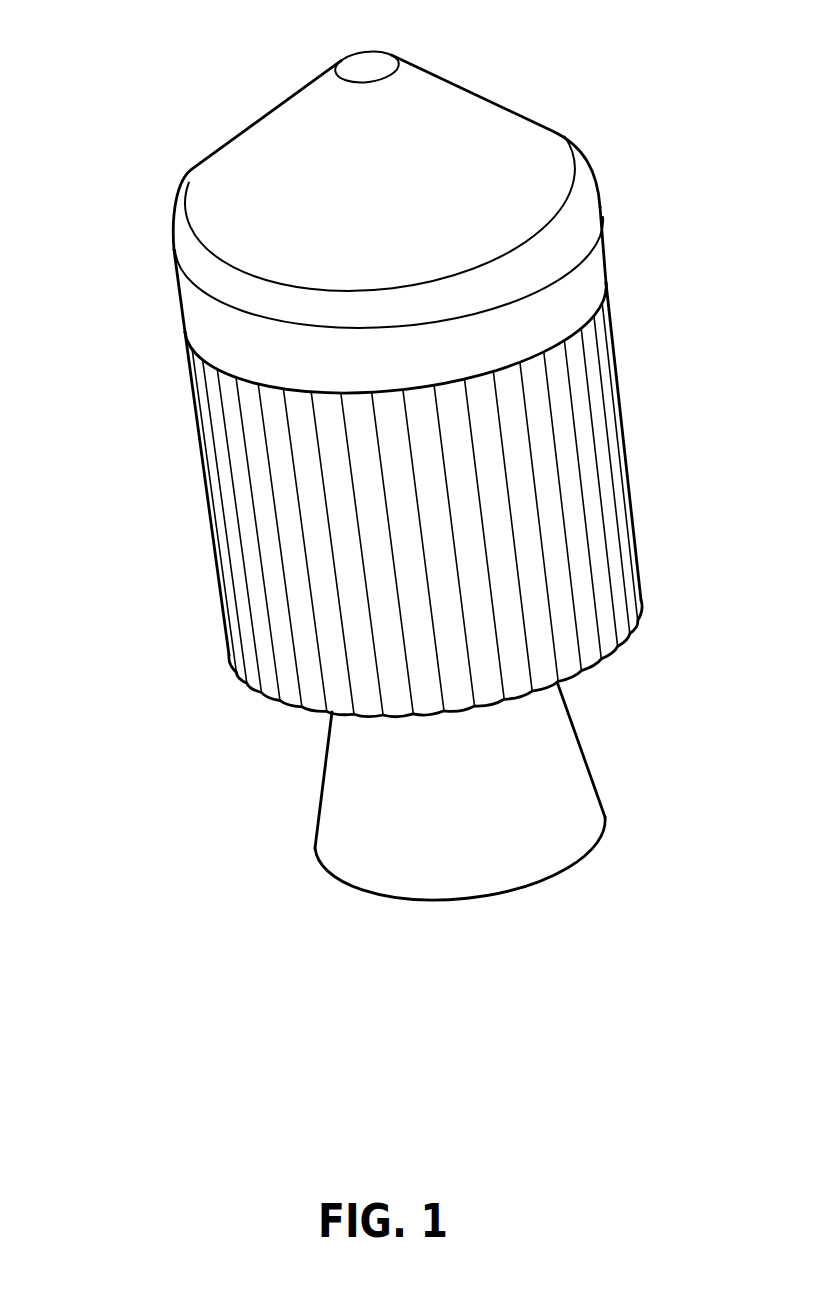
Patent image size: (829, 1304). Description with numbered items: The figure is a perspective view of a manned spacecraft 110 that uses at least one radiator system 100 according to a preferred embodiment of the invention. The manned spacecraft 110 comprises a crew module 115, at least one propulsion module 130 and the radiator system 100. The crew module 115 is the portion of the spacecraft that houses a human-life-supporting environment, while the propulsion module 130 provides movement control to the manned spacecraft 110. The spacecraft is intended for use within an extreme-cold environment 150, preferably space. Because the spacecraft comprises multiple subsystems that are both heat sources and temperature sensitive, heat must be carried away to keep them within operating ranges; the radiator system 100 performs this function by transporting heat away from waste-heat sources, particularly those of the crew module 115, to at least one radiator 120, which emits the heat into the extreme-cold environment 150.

The radiator system 100 is at (202, 563).
The manned spacecraft 110 is at (155, 67).
The crew module 115 is at (288, 128).
The radiator 120 is at (640, 603).
The propulsion module 130 is at (325, 890).
The extreme-cold environment 150 is at (84, 467).